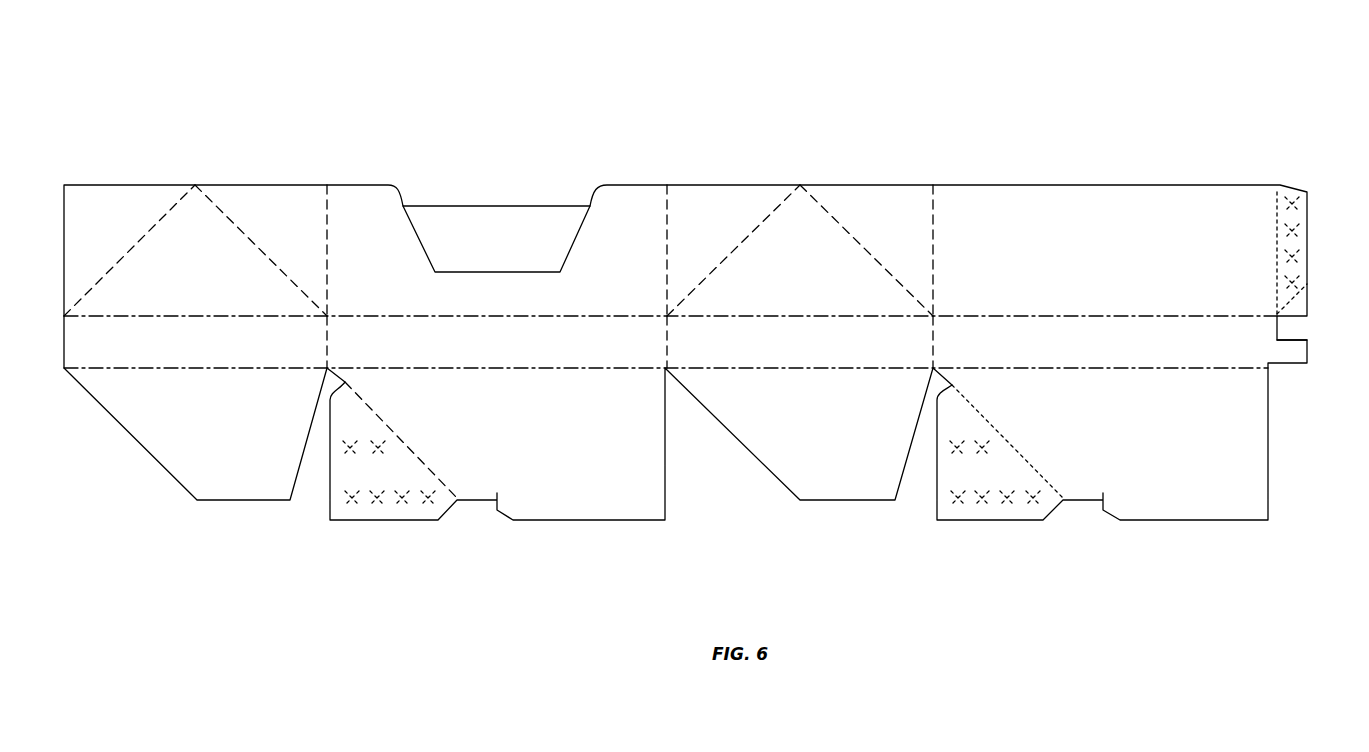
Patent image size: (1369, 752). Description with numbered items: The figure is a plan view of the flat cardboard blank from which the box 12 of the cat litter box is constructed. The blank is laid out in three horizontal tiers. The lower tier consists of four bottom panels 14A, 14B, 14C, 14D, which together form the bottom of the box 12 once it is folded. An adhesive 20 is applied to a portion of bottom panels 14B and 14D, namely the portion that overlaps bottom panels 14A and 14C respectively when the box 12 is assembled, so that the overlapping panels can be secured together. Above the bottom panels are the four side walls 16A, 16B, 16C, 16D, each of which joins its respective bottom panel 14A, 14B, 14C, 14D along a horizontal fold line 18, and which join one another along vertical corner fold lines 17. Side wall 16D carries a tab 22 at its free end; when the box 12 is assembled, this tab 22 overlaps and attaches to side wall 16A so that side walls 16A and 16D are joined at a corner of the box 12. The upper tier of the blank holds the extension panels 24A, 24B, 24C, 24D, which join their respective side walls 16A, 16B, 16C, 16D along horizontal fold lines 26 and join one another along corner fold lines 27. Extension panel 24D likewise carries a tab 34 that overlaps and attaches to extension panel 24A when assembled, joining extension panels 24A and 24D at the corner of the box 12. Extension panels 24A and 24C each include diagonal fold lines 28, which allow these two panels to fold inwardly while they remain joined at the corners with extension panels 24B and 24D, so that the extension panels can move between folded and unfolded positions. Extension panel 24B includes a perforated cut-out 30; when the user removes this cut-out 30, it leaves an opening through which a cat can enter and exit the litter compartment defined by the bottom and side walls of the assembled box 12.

The box 12 is at (755, 87).
The bottom panel 14A is at (220, 427).
The bottom panel 14B is at (494, 427).
The bottom panel 14C is at (800, 427).
The bottom panel 14D is at (1100, 427).
The side wall 16A is at (195, 345).
The side wall 16B is at (494, 345).
The side wall 16C is at (800, 345).
The side wall 16D is at (1100, 345).
The corner fold lines 17 is at (330, 352).
The horizontal fold lines 18 is at (170, 370).
The adhesive 20 is at (383, 500).
The tab 22 is at (1293, 353).
The extension panel 24A is at (195, 255).
The extension panel 24B is at (494, 294).
The extension panel 24C is at (800, 255).
The extension panel 24D is at (1100, 255).
The horizontal fold lines 26 is at (147, 313).
The corner fold lines 27 is at (330, 256).
The diagonal fold lines 28 is at (147, 231).
The perforated cut-out 30 is at (513, 190).
The tab 34 is at (1296, 243).